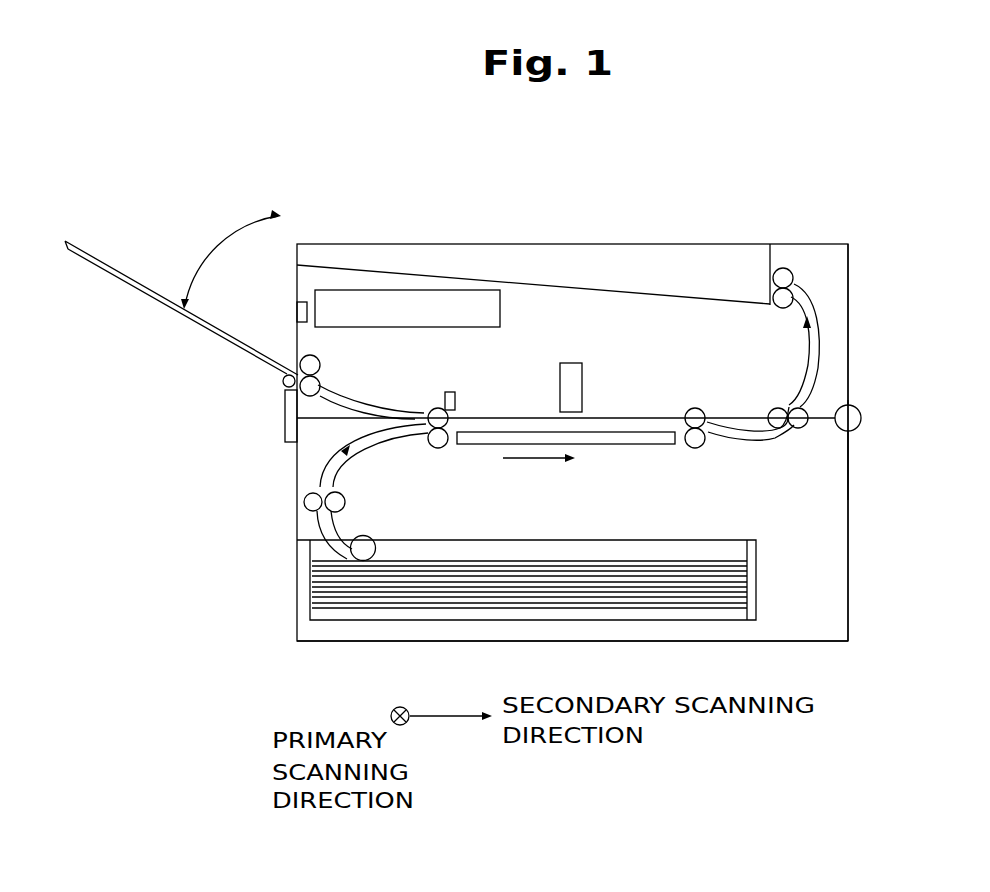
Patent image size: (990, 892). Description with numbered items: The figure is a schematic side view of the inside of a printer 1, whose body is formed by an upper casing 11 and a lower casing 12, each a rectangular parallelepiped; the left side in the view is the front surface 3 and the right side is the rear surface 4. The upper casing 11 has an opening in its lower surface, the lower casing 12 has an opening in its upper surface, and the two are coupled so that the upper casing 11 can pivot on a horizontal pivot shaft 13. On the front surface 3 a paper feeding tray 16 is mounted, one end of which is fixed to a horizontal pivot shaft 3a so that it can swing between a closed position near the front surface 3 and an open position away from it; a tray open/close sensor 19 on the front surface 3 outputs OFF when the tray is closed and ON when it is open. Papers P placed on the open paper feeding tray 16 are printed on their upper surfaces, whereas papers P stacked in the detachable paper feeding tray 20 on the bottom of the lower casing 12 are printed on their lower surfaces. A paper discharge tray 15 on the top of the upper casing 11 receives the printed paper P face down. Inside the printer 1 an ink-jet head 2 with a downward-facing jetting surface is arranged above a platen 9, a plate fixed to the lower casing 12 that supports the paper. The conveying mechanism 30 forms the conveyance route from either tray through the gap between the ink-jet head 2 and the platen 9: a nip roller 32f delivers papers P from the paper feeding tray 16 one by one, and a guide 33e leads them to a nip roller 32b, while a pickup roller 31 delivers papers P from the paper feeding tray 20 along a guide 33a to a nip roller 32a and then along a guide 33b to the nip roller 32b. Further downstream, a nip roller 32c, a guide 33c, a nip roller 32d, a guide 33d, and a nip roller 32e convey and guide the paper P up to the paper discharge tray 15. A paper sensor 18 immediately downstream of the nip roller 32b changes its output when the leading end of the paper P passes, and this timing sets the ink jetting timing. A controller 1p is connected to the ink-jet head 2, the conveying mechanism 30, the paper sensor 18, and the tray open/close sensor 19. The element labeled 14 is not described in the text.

The printer 1 is at (812, 192).
The controller 1p is at (369, 290).
The ink-jet head 2 is at (566, 363).
The front surface 3 is at (297, 284).
The horizontal pivot shaft 3a is at (283, 381).
The rear surface 4 is at (848, 292).
The platen 9 is at (594, 445).
The upper casing 11 is at (838, 402).
The lower casing 12 is at (835, 590).
The horizontal pivot shaft 13 is at (862, 417).
The manual feed sensor 14 is at (285, 409).
The paper discharge tray 15 is at (543, 285).
The paper feeding tray 16 is at (120, 272).
The paper sensor 18 is at (450, 392).
The tray open/close sensor 19 is at (300, 302).
The paper feeding tray 20 is at (304, 600).
The conveying mechanism 30 is at (836, 463).
The pickup roller 31 is at (364, 536).
The nip roller 32a is at (304, 501).
The nip roller 32b is at (439, 449).
The nip roller 32c is at (692, 448).
The nip roller 32d is at (798, 428).
The nip roller 32e is at (773, 297).
The nip roller 32f is at (303, 356).
The guide 33a is at (314, 528).
The guide 33b is at (332, 455).
The guide 33c is at (735, 440).
The guide 33d is at (816, 320).
The guide 33e is at (343, 395).
The paper P is at (500, 562).